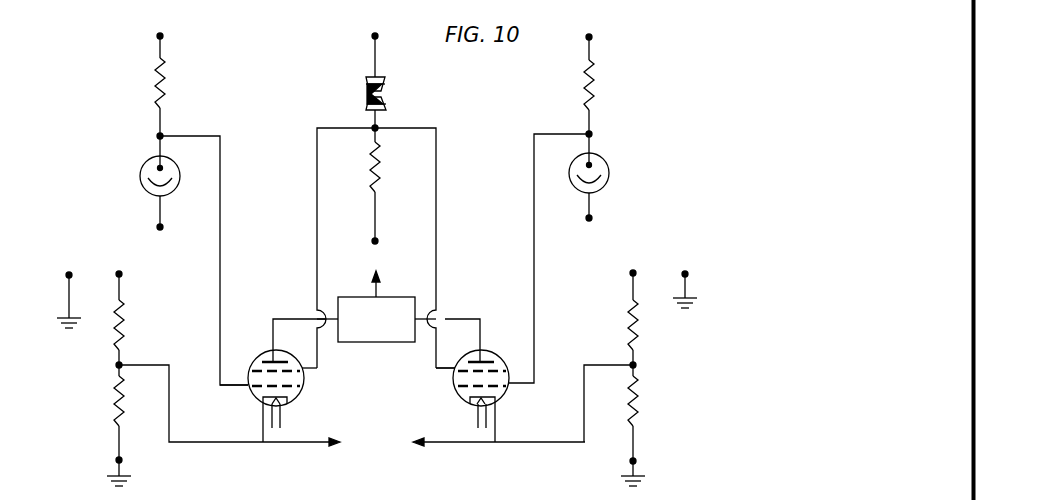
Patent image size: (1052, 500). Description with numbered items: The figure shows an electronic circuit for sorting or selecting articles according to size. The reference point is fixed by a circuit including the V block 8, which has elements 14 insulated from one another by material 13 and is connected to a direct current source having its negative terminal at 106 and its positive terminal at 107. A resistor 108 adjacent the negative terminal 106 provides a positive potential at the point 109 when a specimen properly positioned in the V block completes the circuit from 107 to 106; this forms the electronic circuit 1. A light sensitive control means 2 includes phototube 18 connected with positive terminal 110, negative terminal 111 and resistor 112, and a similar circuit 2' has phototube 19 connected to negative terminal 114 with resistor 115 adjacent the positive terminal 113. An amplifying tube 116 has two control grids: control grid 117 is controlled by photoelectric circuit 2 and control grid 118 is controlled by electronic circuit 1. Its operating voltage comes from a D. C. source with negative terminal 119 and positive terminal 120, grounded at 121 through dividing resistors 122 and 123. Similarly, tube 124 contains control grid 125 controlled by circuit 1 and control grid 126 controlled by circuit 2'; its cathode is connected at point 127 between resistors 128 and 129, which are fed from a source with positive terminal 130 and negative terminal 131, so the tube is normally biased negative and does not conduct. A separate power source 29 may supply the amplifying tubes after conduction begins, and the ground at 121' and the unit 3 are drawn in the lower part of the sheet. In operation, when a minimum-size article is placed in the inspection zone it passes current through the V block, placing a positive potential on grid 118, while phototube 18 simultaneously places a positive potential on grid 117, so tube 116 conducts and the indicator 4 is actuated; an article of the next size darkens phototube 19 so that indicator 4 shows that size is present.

The positive terminal 110 is at (163, 36).
The resistor 112 is at (165, 100).
The light sensitive control means 2 is at (178, 252).
The phototube 18 is at (177, 168).
The negative terminal 111 is at (164, 226).
The positive terminal 107 is at (372, 37).
The V block 8 is at (353, 74).
The insulating material 13 is at (366, 97).
The elements 14 is at (387, 80).
The point 109 is at (372, 127).
The electronic circuit 1 is at (354, 182).
The resistor 108 is at (382, 172).
The negative terminal 106 is at (377, 240).
The positive terminal 113 is at (593, 36).
The resistor 115 is at (597, 92).
The similar circuit 2' is at (589, 248).
The phototube 19 is at (610, 166).
The negative terminal 114 is at (592, 216).
The negative terminal 119 is at (68, 277).
The positive terminal 120 is at (122, 274).
The dividing resistor 122 is at (125, 325).
The resistor 128 is at (116, 365).
The dividing resistor 123 is at (115, 410).
The ground 121 is at (96, 466).
The control grid 117 is at (240, 388).
The control grid 118 is at (303, 372).
The amplifying tube 116 is at (300, 395).
The power source 29 is at (376, 363).
The indicator 4 is at (384, 368).
The power unit 3 is at (385, 491).
The tube 124 is at (488, 350).
The control grid 125 is at (455, 370).
The control grid 126 is at (506, 393).
The positive terminal 130 is at (630, 275).
The point 127 is at (637, 365).
The resistor 129 is at (640, 420).
The ground terminal 121' is at (659, 459).
The negative terminal 131 is at (688, 275).